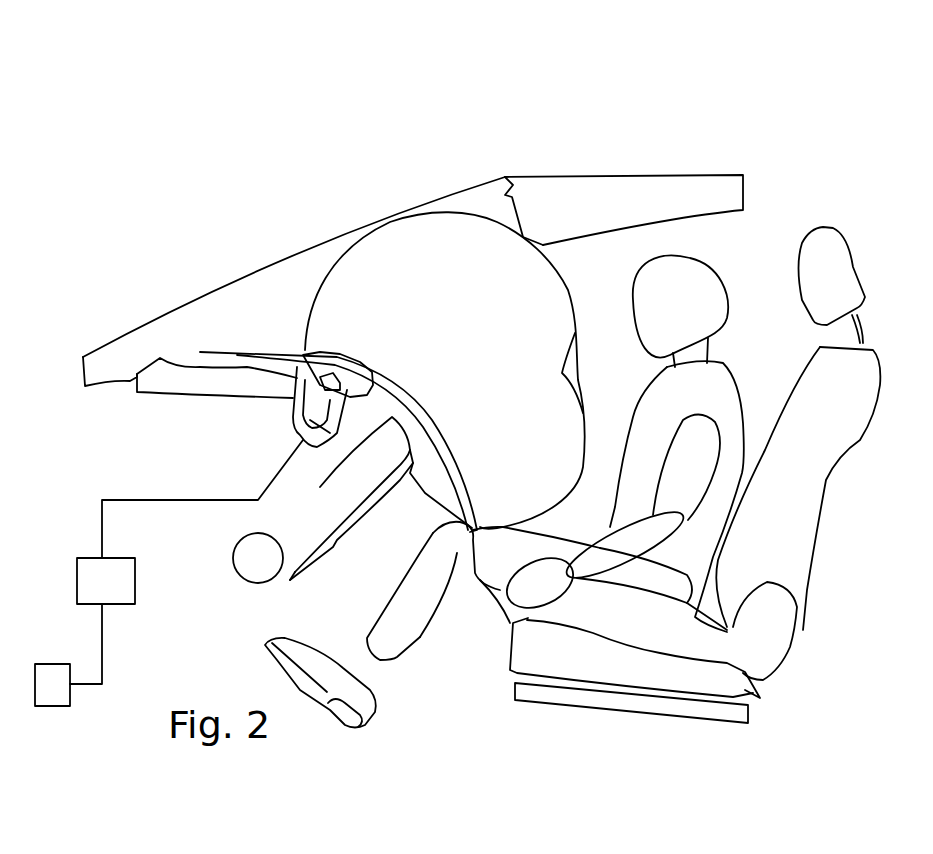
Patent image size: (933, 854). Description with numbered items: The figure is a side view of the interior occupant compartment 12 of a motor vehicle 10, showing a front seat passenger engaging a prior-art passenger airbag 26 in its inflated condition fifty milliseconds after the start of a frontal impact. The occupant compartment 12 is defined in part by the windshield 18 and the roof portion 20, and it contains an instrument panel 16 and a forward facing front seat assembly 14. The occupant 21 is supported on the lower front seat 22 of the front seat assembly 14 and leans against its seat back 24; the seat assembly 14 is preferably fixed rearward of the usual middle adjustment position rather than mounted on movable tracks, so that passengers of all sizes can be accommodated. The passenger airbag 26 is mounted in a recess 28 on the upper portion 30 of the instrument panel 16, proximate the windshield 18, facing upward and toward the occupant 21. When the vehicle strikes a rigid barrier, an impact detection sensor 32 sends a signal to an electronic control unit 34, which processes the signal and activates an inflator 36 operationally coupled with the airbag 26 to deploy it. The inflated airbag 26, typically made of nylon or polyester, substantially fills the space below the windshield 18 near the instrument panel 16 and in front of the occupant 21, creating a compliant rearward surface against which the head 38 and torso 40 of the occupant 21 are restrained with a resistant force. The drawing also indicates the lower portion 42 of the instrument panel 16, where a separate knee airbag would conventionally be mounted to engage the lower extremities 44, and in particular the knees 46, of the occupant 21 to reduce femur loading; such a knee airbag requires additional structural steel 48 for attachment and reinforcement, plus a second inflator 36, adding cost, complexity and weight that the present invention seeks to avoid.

The motor vehicle 10 is at (807, 152).
The interior occupant compartment 12 is at (592, 258).
The forward facing front seat assembly 14 is at (700, 637).
The instrument panel 16 is at (321, 486).
The windshield 18 is at (310, 265).
The roof portion 20 is at (552, 197).
The occupant 21 is at (627, 421).
The lower front seat 22 is at (612, 622).
The seat back 24 is at (827, 440).
The passenger airbag 26 is at (413, 250).
The recess 28 is at (300, 401).
The upper portion 30 is at (376, 398).
The impact detection sensor 32 is at (53, 700).
The electronic control unit 34 is at (122, 584).
The inflator 36 is at (297, 437).
The head 38 is at (710, 292).
The torso 40 is at (725, 390).
The lower portion 42 is at (383, 497).
The lower extremities 44 is at (407, 630).
The knees 46 is at (463, 548).
The additional structural steel 48 is at (257, 570).